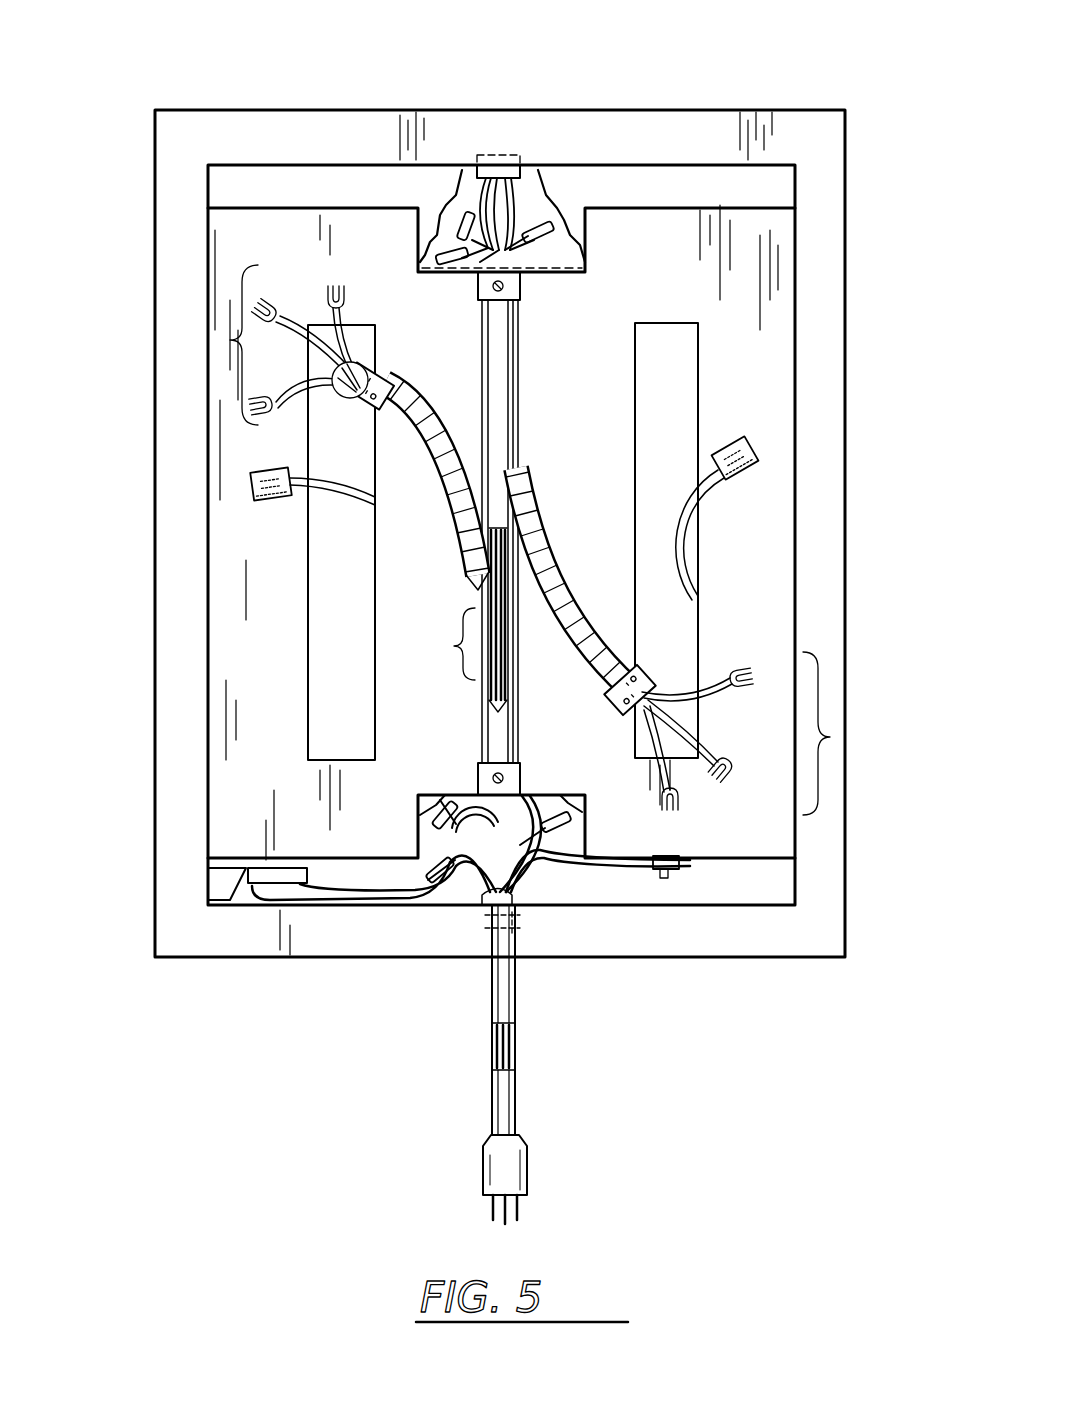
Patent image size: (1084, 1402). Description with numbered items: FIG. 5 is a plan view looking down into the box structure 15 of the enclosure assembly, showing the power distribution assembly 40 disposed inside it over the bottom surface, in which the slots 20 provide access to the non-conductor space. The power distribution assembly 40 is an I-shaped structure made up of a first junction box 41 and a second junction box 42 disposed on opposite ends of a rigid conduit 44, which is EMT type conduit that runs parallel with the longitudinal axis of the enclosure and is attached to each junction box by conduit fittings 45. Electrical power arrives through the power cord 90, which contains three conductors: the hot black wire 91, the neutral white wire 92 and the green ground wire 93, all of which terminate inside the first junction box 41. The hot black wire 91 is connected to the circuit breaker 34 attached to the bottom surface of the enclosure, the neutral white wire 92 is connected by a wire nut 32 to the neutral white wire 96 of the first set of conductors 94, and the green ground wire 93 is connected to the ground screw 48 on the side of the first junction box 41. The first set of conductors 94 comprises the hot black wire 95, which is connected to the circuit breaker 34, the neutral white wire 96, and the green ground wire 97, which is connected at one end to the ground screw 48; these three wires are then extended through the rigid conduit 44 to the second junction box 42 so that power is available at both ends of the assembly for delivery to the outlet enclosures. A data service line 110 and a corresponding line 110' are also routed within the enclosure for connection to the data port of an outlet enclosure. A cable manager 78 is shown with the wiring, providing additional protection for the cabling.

The box structure 15 is at (608, 110).
The power distribution assembly 40 is at (766, 192).
The second junction box 42 is at (566, 240).
The conduit fittings 45 is at (478, 288).
The rigid conduit 44 is at (500, 405).
The slots 20 is at (684, 352).
The cable manager 78 is at (468, 566).
The first set of conductors 94 is at (225, 340).
The hot black wire 95 is at (742, 666).
The neutral white wire 96 is at (730, 772).
The green ground wire 97 is at (660, 803).
The data service line 110 is at (220, 489).
The connector 110' is at (808, 516).
The wire nut 32 is at (478, 790).
The circuit breaker 34 is at (246, 878).
The first junction box 41 is at (566, 845).
The hot black wire 91 is at (440, 848).
The neutral white wire 92 is at (492, 880).
The green ground wire 93 is at (520, 870).
The ground screw 48 is at (682, 872).
The power cord 90 is at (516, 1108).